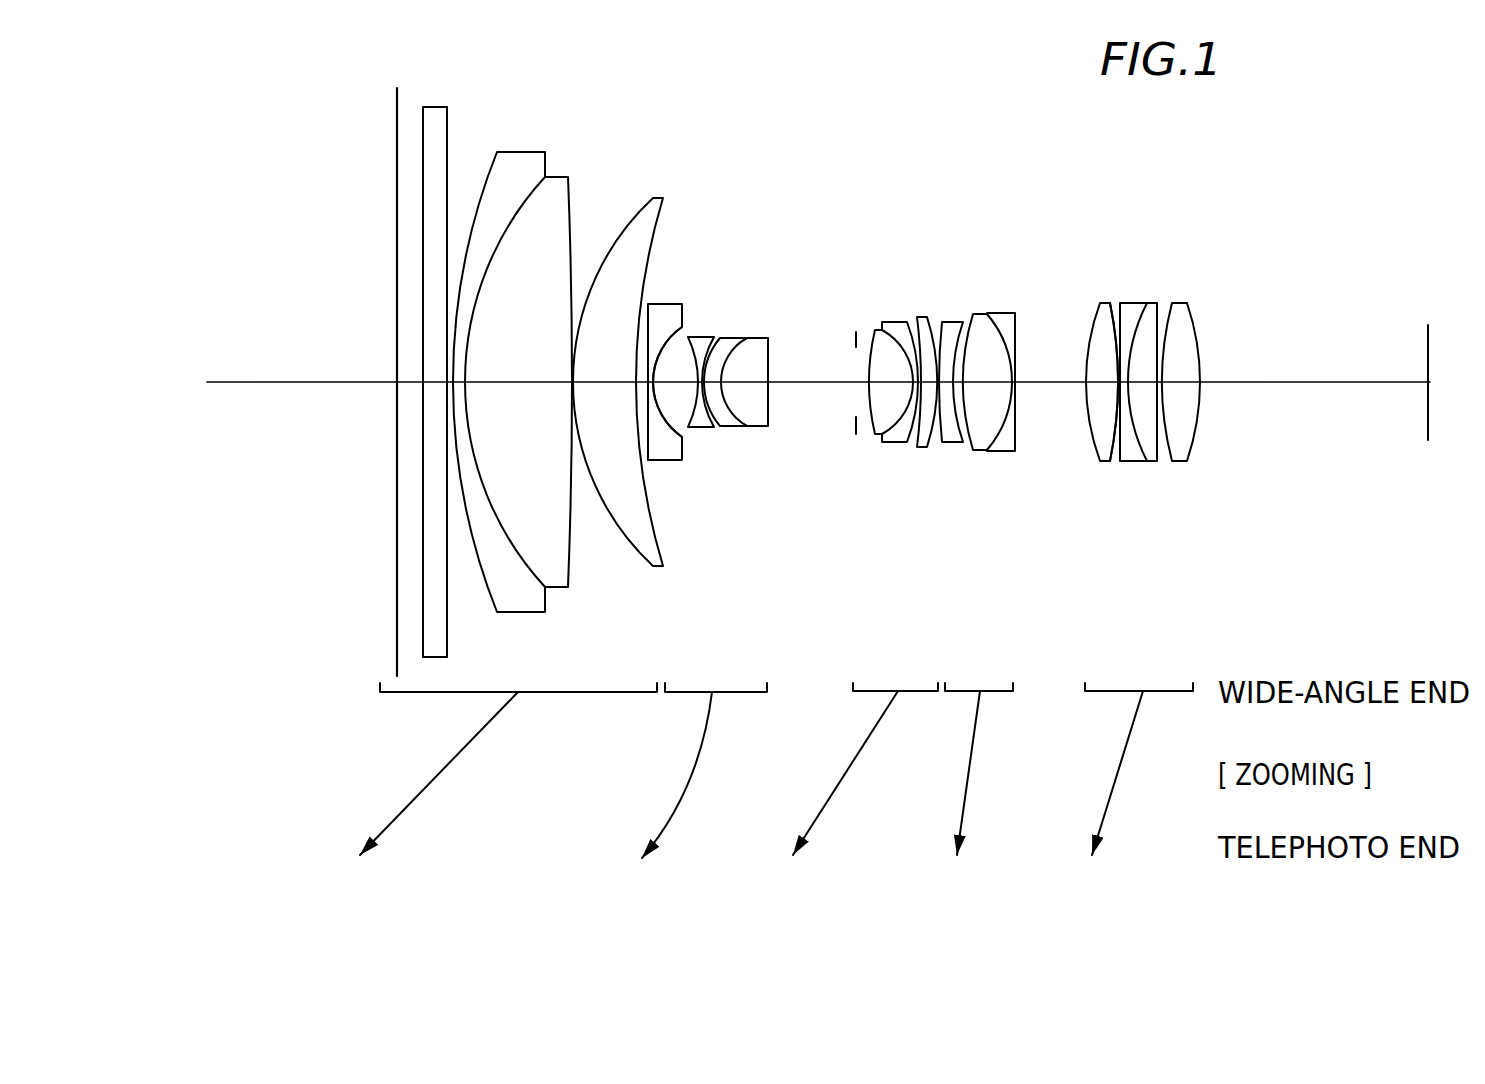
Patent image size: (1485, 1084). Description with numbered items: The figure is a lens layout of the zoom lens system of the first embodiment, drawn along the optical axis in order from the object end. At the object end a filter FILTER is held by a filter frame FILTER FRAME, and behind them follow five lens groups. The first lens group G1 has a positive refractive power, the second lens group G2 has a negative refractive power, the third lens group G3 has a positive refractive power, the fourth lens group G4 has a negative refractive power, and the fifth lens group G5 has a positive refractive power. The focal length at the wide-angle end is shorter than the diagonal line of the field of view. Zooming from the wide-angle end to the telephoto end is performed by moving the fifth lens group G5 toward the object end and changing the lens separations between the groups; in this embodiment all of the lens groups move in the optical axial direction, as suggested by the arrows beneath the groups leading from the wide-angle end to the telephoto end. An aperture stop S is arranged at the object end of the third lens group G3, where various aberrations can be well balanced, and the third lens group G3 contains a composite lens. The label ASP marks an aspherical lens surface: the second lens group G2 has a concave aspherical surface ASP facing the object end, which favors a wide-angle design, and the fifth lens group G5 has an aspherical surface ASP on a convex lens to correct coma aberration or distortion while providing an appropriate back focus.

The filter frame FILTER FRAME is at (395, 137).
The filter FILTER is at (437, 115).
The first lens group G1 is at (668, 133).
The second lens group G2 is at (773, 276).
The third lens group G3 is at (938, 276).
The fourth lens group G4 is at (1015, 276).
The fifth lens group G5 is at (1195, 276).
The aperture stop S is at (857, 338).
The aspherical lens surface ASP is at (650, 455).